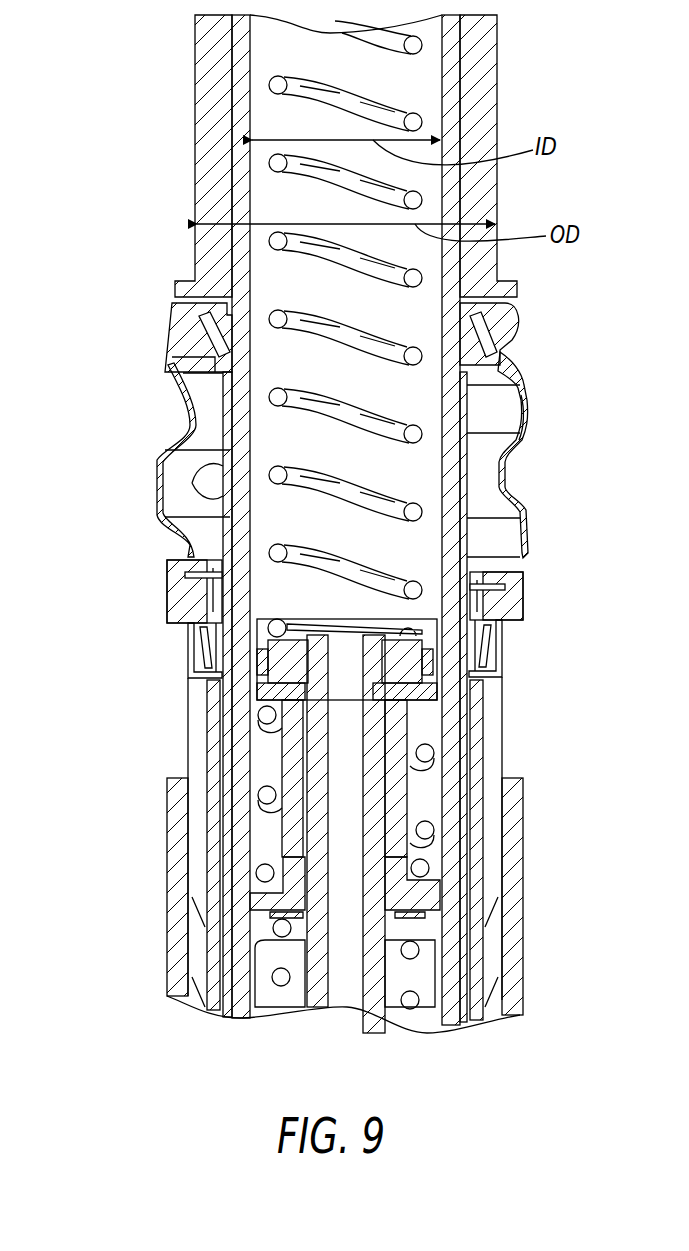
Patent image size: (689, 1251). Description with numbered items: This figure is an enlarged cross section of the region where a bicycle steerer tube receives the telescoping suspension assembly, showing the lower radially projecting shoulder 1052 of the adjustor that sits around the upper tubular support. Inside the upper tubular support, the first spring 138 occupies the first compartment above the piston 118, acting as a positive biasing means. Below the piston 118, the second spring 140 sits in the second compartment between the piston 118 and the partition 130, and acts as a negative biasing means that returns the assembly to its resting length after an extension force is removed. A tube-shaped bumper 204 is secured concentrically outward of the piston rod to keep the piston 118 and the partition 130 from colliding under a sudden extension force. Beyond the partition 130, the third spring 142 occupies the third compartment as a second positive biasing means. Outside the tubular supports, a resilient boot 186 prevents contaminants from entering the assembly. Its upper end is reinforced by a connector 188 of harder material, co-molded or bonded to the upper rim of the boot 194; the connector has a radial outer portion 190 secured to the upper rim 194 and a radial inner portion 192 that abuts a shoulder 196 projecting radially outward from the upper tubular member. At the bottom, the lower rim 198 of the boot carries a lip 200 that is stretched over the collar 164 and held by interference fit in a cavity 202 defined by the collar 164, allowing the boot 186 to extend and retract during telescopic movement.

The lower radially projecting shoulder 1052 is at (517, 290).
The first spring 138 is at (420, 515).
The radial outer portion 190 is at (197, 308).
The radial inner portion 192 is at (190, 405).
The upper rim of the boot 194 is at (520, 312).
The boot 186 is at (156, 365).
The connector 188 is at (497, 338).
The shoulder 196 is at (512, 385).
The lower rim 198 is at (156, 565).
The lip 200 is at (505, 595).
The cavity 202 is at (480, 676).
The collar 164 is at (518, 628).
The piston 118 is at (255, 680).
The bumper 204 is at (400, 718).
The second spring 140 is at (422, 760).
The partition 130 is at (446, 903).
The third spring 142 is at (415, 950).